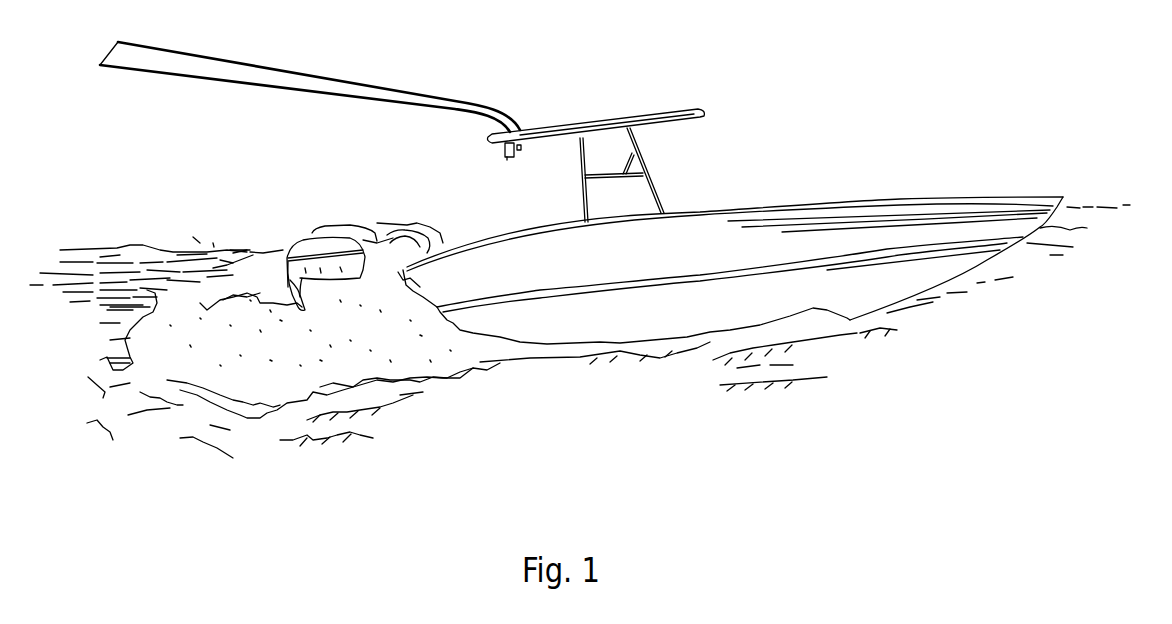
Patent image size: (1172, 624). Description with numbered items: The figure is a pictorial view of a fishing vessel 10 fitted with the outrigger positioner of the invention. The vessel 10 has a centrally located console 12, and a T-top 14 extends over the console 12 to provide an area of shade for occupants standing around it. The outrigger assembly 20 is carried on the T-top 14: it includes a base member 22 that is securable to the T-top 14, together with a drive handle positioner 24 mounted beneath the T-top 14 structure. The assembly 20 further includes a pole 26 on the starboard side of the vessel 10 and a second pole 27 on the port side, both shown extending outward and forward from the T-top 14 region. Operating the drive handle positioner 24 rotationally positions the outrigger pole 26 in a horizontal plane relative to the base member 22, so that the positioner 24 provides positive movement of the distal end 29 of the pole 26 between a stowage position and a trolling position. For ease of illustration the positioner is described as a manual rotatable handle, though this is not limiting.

The fishing vessel 10 is at (832, 200).
The console 12 is at (631, 182).
The T-top 14 is at (653, 113).
The outrigger assembly 20 is at (495, 157).
The base member 22 is at (507, 158).
The drive handle positioner 24 is at (519, 152).
The pole 26 is at (195, 78).
The second pole 27 is at (222, 60).
The distal end 29 is at (100, 65).